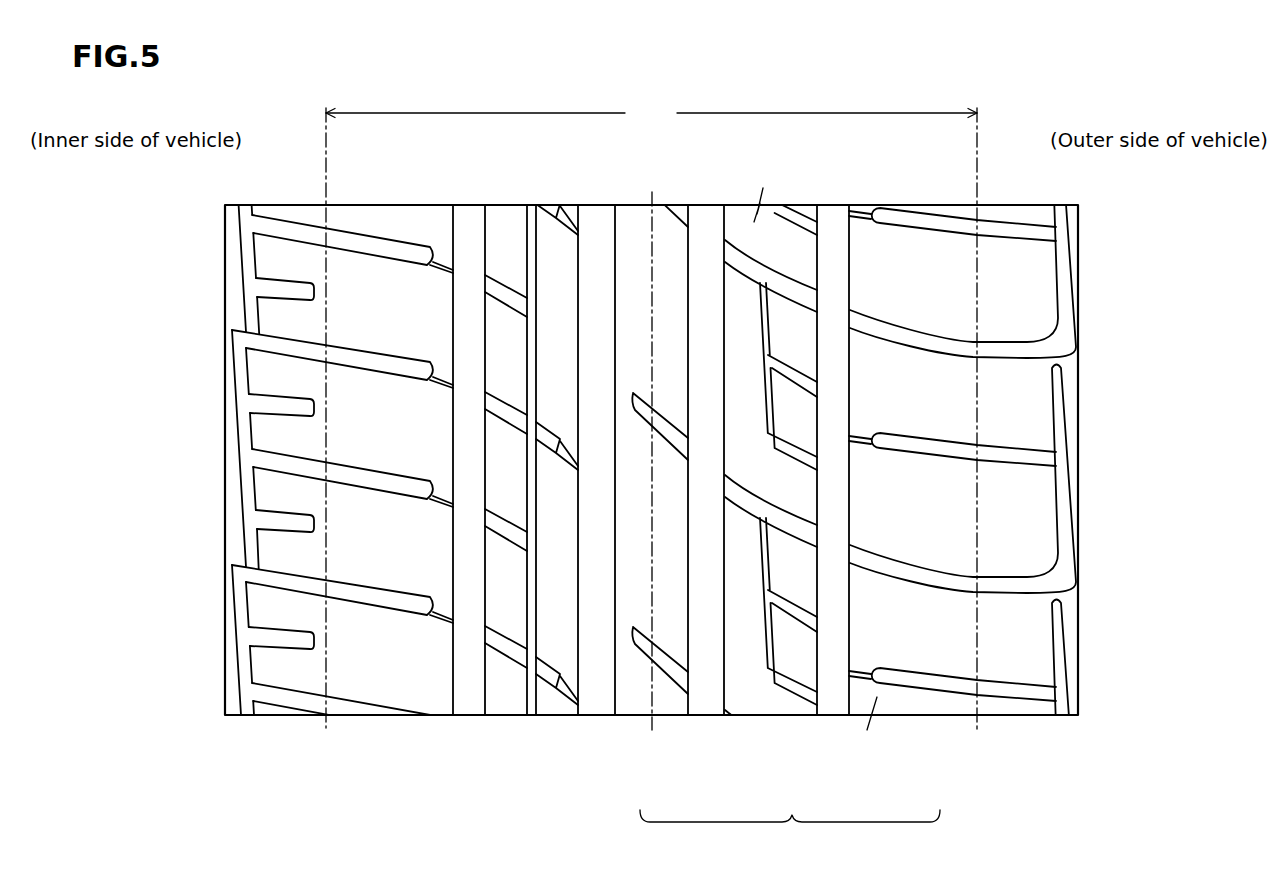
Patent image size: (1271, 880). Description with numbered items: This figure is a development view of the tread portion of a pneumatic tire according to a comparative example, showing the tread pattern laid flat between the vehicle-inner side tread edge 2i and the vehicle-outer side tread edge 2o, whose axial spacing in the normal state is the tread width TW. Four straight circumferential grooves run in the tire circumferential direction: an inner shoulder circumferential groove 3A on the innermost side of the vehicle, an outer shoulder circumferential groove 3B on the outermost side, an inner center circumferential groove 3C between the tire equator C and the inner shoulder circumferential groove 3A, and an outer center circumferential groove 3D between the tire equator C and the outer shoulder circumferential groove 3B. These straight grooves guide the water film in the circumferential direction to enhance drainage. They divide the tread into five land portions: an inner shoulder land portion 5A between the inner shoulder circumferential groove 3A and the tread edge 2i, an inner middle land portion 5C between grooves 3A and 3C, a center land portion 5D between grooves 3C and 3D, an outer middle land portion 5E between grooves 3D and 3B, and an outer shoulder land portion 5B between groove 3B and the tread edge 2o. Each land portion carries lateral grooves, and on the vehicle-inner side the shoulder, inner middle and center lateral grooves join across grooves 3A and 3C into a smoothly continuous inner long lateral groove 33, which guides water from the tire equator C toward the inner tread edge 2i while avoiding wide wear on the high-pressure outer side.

The vehicle-inner side tread edge 2i is at (326, 185).
The vehicle-outer side tread edge 2o is at (977, 185).
The tread width TW is at (651, 114).
The tire equator C is at (650, 449).
The inner shoulder circumferential groove 3A is at (470, 680).
The outer shoulder circumferential groove 3B is at (835, 675).
The inner center circumferential groove 3C is at (598, 680).
The outer center circumferential groove 3D is at (713, 675).
The inner shoulder land portion 5A is at (395, 285).
The outer shoulder land portion 5B is at (873, 245).
The inner middle land portion 5C is at (520, 245).
The center land portion 5D is at (633, 243).
The outer middle land portion 5E is at (745, 240).
The inner long lateral groove 33 is at (904, 494).